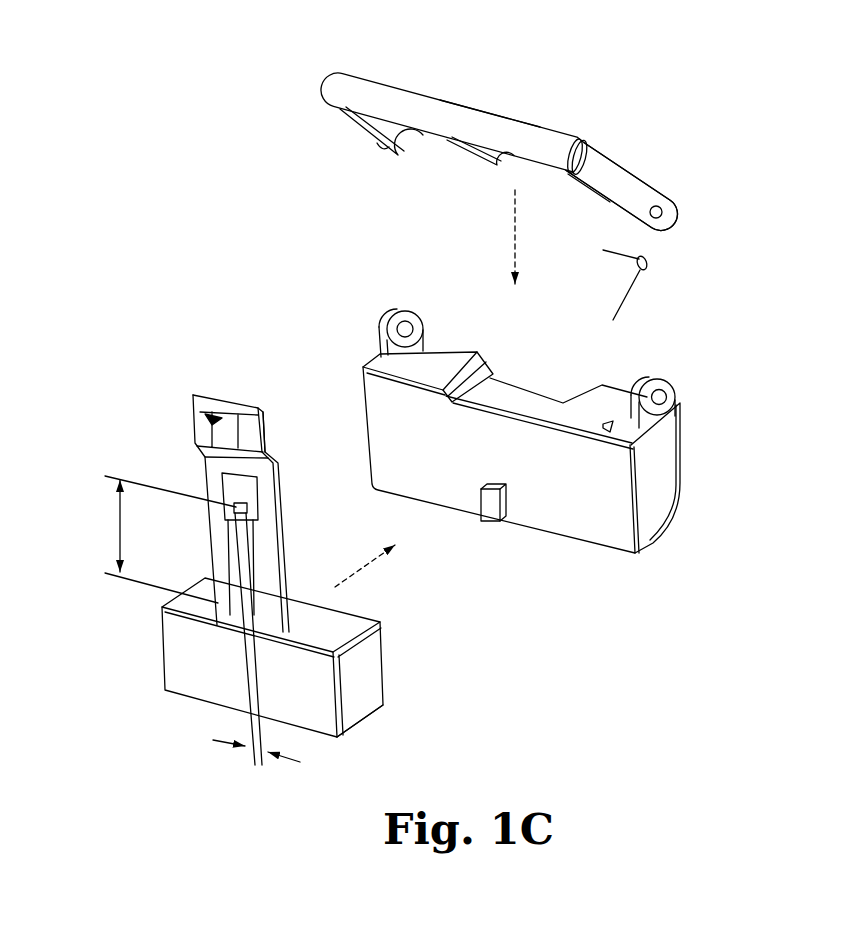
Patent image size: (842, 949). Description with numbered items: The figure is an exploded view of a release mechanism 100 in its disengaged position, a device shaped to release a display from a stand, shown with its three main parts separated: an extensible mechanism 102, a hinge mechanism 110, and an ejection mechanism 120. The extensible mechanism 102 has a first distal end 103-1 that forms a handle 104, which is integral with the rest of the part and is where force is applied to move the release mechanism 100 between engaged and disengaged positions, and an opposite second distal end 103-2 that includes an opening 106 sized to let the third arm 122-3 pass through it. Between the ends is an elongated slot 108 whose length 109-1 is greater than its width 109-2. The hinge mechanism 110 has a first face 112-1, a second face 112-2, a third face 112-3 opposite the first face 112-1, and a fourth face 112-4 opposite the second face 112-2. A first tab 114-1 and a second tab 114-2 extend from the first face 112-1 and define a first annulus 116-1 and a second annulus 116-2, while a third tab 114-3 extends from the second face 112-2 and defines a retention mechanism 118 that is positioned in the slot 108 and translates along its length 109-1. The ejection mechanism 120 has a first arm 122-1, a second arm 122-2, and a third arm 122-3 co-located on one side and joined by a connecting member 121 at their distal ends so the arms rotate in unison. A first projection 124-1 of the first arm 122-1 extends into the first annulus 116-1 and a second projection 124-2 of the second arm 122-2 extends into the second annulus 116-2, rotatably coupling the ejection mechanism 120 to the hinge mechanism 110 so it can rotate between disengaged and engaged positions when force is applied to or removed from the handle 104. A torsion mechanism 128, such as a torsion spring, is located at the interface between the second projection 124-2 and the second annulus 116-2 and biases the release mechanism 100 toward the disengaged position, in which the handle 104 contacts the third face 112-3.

The release mechanism 100 is at (215, 178).
The extensible mechanism 102 is at (208, 544).
The first distal end 103-1 is at (357, 723).
The second distal end 103-2 is at (267, 418).
The handle 104 is at (160, 665).
The opening 106 is at (195, 398).
The slot 108 is at (250, 561).
The length 109-1 is at (151, 539).
The width 109-2 is at (231, 742).
The hinge mechanism 110 is at (360, 383).
The first face 112-1 is at (443, 360).
The second face 112-2 is at (537, 506).
The third face 112-3 is at (587, 547).
The fourth face 112-4 is at (528, 394).
The first tab 114-1 is at (376, 307).
The second tab 114-2 is at (639, 382).
The third tab 114-3 is at (483, 521).
The first annulus 116-1 is at (404, 328).
The second annulus 116-2 is at (661, 400).
The retention mechanism 118 is at (490, 497).
The ejection mechanism 120 is at (333, 86).
The connecting member 121 is at (519, 132).
The first arm 122-1 is at (350, 120).
The second arm 122-2 is at (598, 165).
The third arm 122-3 is at (465, 153).
The first projection 124-1 is at (383, 148).
The second projection 124-2 is at (667, 216).
The torsion mechanism 128 is at (633, 263).